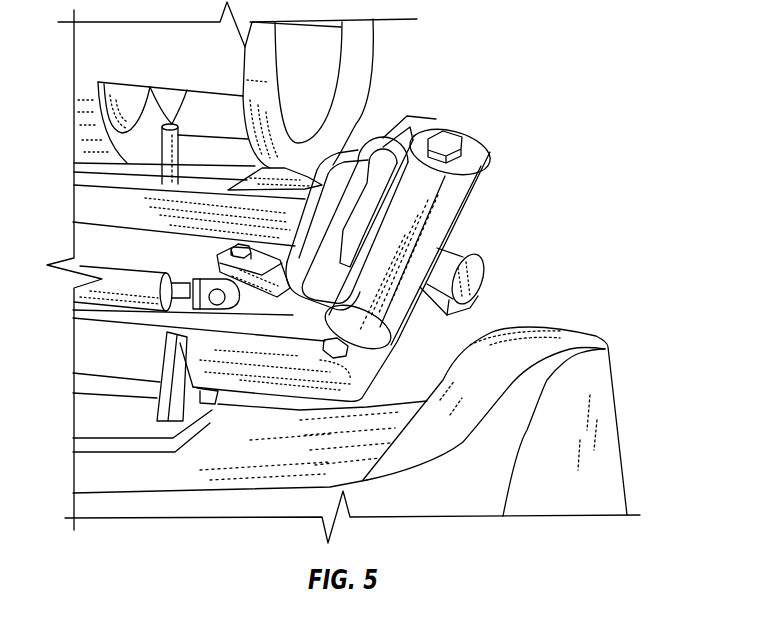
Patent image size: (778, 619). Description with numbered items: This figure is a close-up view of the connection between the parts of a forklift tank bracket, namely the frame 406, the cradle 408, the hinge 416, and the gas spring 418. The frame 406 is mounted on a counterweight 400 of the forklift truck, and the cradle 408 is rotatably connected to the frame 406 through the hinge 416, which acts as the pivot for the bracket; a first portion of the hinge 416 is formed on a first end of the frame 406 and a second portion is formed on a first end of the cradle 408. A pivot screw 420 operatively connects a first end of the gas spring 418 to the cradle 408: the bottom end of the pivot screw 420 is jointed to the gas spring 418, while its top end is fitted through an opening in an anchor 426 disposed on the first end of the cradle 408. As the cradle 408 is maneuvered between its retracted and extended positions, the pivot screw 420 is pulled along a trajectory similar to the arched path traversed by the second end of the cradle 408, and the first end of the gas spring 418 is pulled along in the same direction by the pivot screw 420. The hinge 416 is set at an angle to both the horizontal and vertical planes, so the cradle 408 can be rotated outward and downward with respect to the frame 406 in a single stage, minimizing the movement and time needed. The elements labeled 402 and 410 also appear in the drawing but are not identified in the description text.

The counterweight 400 is at (628, 383).
The cylinder 402 is at (357, 68).
The frame 406 is at (220, 395).
The cradle 408 is at (76, 222).
The pin 410 is at (171, 122).
The hinge 416 is at (457, 213).
The gas spring 418 is at (92, 307).
The pivot screw 420 is at (245, 302).
The anchor 426 is at (237, 247).